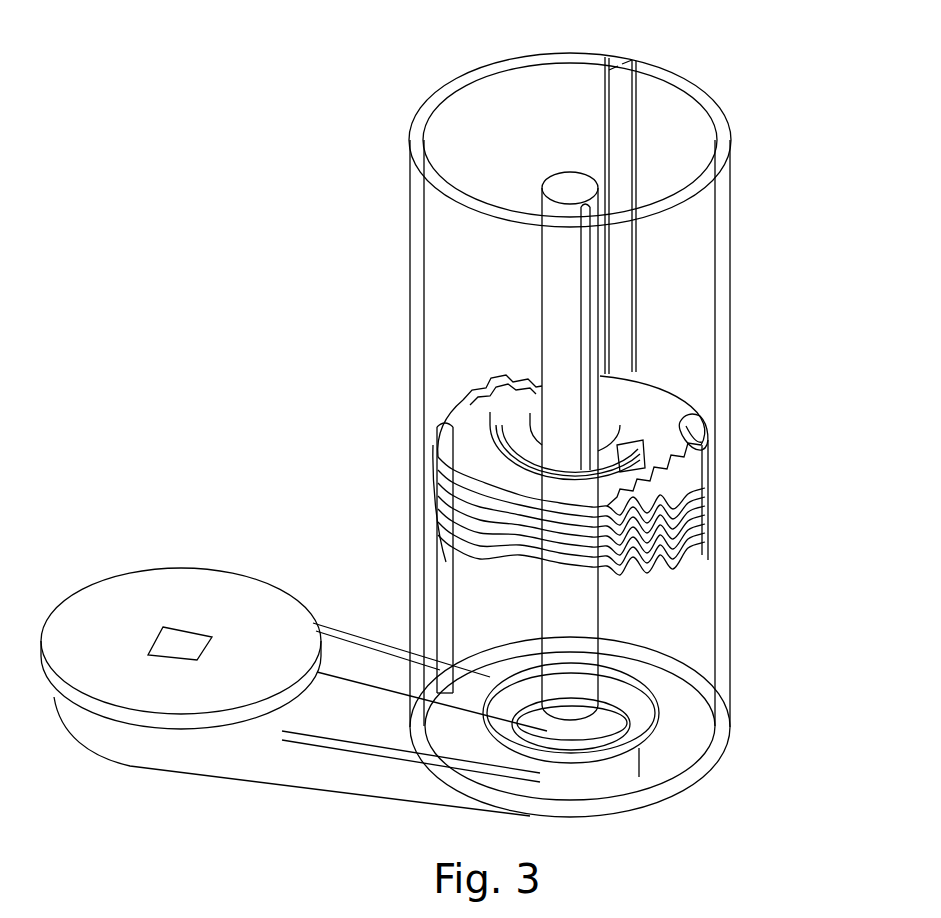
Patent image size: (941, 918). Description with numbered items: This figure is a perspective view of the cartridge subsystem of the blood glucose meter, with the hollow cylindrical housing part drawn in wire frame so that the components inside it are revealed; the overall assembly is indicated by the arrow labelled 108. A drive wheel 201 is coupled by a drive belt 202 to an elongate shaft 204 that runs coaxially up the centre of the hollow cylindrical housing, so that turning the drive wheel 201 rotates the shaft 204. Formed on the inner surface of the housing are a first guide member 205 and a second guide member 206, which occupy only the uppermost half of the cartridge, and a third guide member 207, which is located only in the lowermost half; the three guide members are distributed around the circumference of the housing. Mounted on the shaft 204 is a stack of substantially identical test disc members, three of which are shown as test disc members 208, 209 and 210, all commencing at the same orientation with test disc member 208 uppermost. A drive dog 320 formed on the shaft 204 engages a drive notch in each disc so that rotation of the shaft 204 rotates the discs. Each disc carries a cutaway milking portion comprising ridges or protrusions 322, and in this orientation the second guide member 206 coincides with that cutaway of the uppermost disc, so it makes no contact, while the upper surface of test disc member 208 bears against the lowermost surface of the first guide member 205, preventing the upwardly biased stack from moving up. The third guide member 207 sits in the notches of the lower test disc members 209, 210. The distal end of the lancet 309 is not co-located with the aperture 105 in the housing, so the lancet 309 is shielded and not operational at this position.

The rotary mechanism assembly 108 is at (850, 147).
The aperture 105 is at (717, 490).
The drive wheel 201 is at (155, 593).
The drive belt 202 is at (273, 753).
The elongate shaft 204 is at (560, 191).
The first guide member 205 is at (613, 125).
The second guide member 206 is at (593, 352).
The third guide member 207 is at (443, 567).
The test disc member 208 is at (650, 397).
The test disc member 209 is at (668, 508).
The test disc member 210 is at (647, 550).
The lancet 309 is at (700, 430).
The drive dog 320 is at (452, 405).
The ridges or protrusions 322 is at (680, 540).